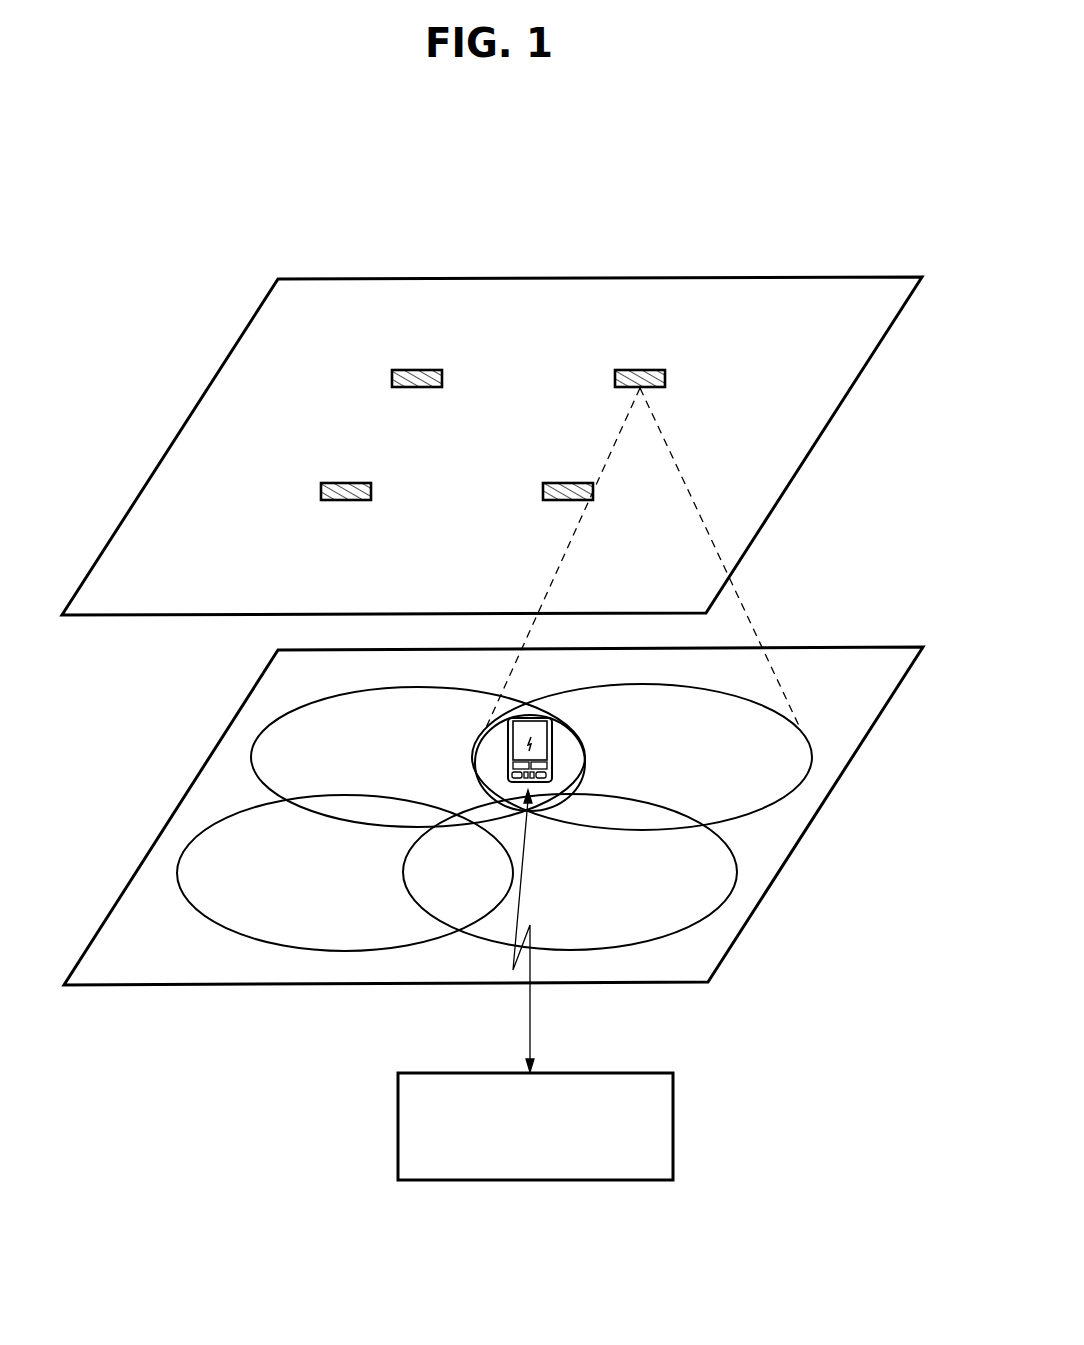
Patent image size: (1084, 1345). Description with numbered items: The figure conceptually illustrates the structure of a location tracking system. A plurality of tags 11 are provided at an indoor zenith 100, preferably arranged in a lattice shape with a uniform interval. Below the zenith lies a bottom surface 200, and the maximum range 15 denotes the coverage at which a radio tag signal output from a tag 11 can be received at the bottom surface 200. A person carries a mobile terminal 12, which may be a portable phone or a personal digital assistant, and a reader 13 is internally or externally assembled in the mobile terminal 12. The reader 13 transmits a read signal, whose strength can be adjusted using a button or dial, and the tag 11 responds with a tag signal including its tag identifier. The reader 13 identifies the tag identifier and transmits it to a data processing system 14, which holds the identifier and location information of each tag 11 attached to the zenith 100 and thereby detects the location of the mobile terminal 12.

The indoor zenith 100 is at (764, 277).
The tag 11 is at (641, 370).
The bottom surface 200 is at (851, 647).
The maximum range 15 is at (808, 685).
The mobile terminal 12 is at (545, 732).
The reader 13 is at (552, 767).
The data processing system 14 is at (673, 1127).